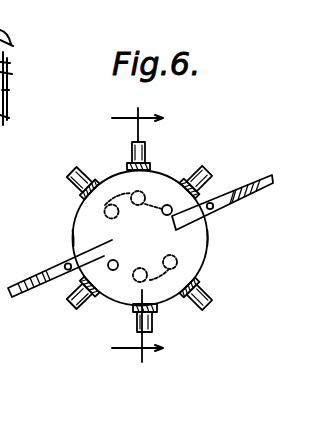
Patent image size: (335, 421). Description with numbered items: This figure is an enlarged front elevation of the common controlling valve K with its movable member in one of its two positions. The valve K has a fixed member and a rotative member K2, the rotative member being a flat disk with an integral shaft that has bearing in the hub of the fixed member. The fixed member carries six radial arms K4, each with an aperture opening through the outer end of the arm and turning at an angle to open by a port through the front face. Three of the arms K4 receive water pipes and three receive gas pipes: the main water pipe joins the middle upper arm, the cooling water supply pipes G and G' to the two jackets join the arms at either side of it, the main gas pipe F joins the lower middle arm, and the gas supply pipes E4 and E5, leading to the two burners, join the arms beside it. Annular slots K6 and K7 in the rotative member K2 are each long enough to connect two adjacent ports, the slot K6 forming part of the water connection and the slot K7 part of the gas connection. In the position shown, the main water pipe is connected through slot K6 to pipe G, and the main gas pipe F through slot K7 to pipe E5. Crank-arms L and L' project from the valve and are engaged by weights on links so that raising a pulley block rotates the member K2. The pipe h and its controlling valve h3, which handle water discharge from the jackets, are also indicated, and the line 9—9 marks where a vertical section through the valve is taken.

The controlling valve K is at (60, 249).
The pipe h is at (73, 232).
The rotative member K2 is at (208, 238).
The valve h3 is at (119, 213).
The annular slot K6 is at (106, 203).
The annular slot K7 is at (177, 264).
The crank-arm L is at (60, 288).
The crank-arm L' is at (222, 191).
The cooling water supply pipe G is at (80, 170).
The cooling water supply pipe G' is at (201, 169).
The gas supply pipe E4 is at (81, 311).
The gas supply pipe E5 is at (207, 309).
The radial arms K4 is at (124, 311).
The main gas pipe F is at (147, 124).
The section line 9— 9 is at (146, 232).